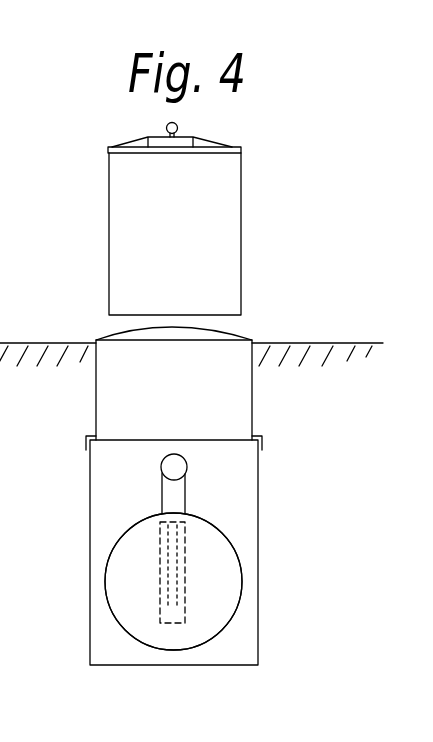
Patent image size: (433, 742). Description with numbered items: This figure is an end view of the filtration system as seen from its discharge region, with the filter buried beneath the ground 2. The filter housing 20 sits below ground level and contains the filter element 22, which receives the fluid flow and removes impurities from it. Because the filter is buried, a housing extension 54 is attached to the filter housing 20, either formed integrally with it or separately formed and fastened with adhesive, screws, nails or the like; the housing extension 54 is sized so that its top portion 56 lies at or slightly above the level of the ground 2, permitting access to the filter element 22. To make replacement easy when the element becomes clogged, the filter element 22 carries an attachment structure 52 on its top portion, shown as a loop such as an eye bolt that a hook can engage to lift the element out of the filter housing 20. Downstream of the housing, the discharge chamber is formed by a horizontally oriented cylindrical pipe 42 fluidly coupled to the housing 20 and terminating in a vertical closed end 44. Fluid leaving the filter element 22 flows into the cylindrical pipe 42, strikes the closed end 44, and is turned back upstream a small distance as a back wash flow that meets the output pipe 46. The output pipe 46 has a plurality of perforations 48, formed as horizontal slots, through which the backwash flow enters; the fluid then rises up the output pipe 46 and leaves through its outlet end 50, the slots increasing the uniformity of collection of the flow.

The ground 2 is at (0, 343).
The filter housing 20 is at (222, 653).
The filter element 22 is at (230, 208).
The cylindrical pipe 42 is at (232, 627).
The closed end 44 is at (132, 587).
The output pipe 46 is at (173, 497).
The perforations 48 is at (185, 544).
The outlet end 50 is at (168, 468).
The attachment structure 52 is at (178, 124).
The housing extension 54 is at (240, 402).
The top portion 56 is at (216, 332).